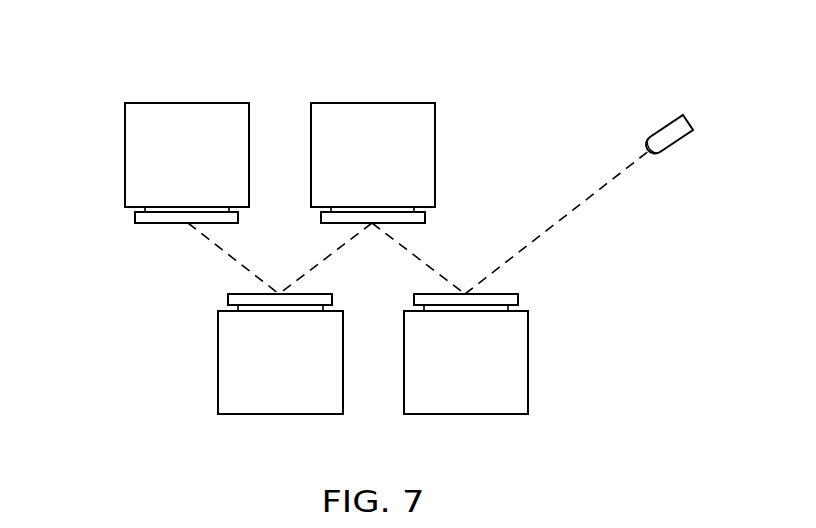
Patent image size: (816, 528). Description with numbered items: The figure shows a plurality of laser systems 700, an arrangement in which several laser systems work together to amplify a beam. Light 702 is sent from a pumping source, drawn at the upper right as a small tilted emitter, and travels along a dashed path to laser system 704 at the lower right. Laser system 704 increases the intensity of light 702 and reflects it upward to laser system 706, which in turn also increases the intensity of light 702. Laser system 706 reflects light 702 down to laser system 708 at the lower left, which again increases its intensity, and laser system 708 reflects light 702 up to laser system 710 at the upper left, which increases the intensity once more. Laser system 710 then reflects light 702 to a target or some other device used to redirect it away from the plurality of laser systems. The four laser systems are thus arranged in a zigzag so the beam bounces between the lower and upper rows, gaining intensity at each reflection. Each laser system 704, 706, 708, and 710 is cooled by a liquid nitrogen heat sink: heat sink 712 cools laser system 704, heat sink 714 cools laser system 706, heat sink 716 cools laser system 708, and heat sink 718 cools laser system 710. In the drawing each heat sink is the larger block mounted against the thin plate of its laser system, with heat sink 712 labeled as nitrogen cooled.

The plurality of laser systems 700 is at (578, 45).
The light 702 is at (680, 143).
The laser system 704 is at (557, 400).
The laser system 706 is at (458, 143).
The laser system 708 is at (187, 400).
The laser system 710 is at (100, 143).
The liquid nitrogen heat sink 712 is at (466, 414).
The liquid nitrogen heat sink 714 is at (372, 103).
The liquid nitrogen heat sink 716 is at (279, 414).
The liquid nitrogen heat sink 718 is at (187, 103).